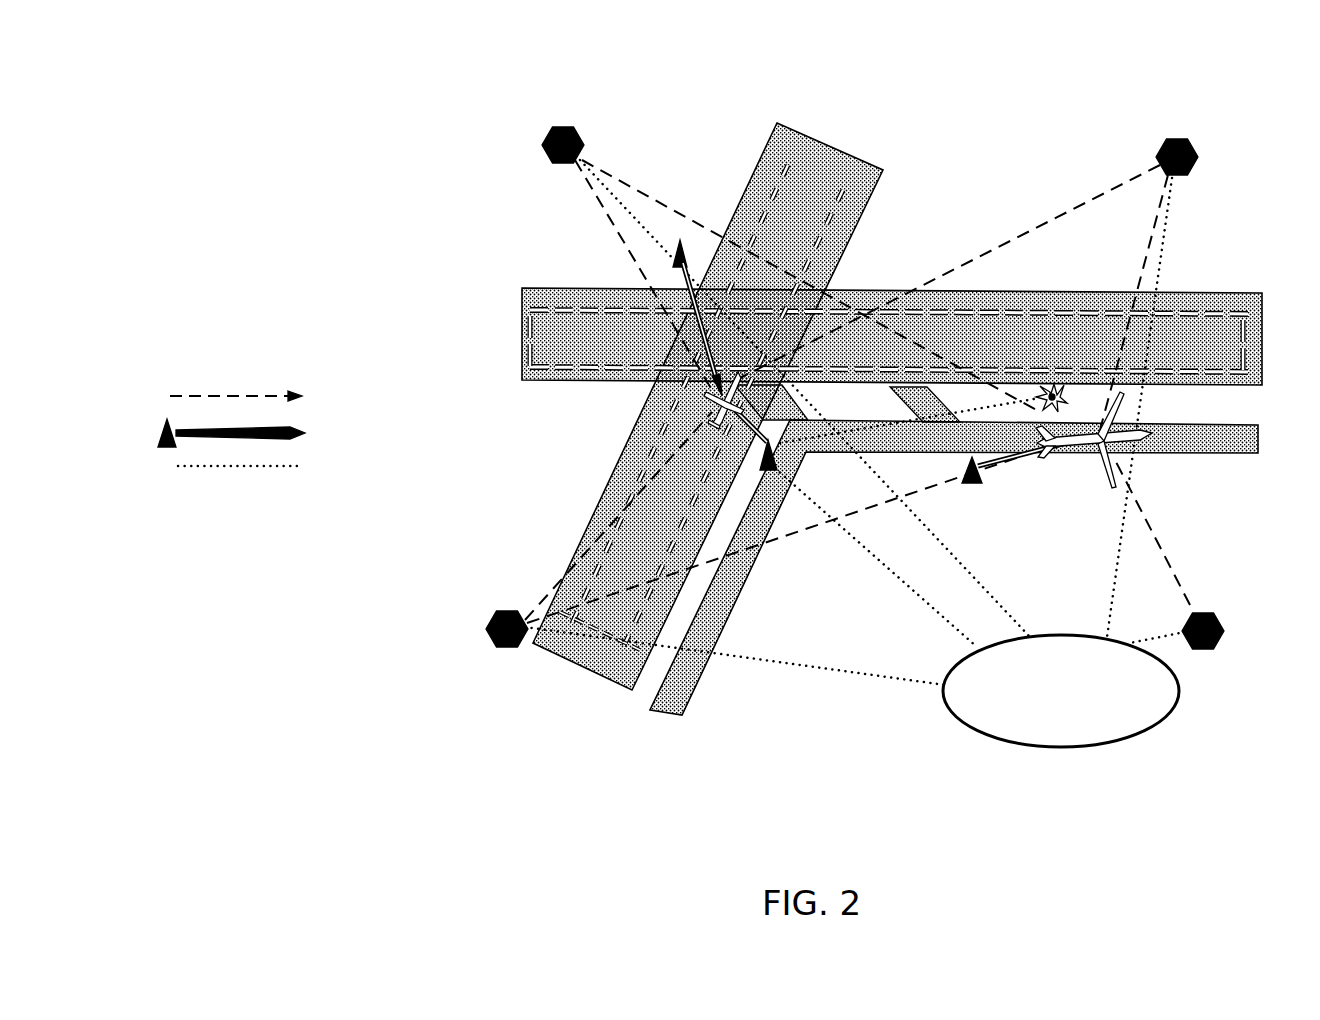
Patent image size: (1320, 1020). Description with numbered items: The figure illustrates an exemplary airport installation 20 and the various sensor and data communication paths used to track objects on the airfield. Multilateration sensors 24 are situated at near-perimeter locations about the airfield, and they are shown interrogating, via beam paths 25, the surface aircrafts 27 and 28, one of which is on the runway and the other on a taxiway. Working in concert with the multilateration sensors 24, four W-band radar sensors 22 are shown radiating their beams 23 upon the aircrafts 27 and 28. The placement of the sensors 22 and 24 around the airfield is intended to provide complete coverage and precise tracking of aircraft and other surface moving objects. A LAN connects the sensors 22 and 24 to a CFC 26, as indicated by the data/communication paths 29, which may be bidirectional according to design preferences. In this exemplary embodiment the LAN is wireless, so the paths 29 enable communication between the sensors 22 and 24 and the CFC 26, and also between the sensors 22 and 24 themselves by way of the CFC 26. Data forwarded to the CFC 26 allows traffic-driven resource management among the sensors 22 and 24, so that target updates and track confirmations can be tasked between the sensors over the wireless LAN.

The airport installation 20 is at (1308, 72).
The W-band radar sensor 22 is at (677, 255).
The radar beam 23 is at (703, 292).
The multilateration sensor 24 is at (543, 142).
The beam path 25 is at (630, 177).
The CFC 26 is at (1033, 743).
The surface aircraft 27 is at (703, 407).
The surface aircraft 28 is at (1087, 457).
The data/communication path 29 is at (760, 370).